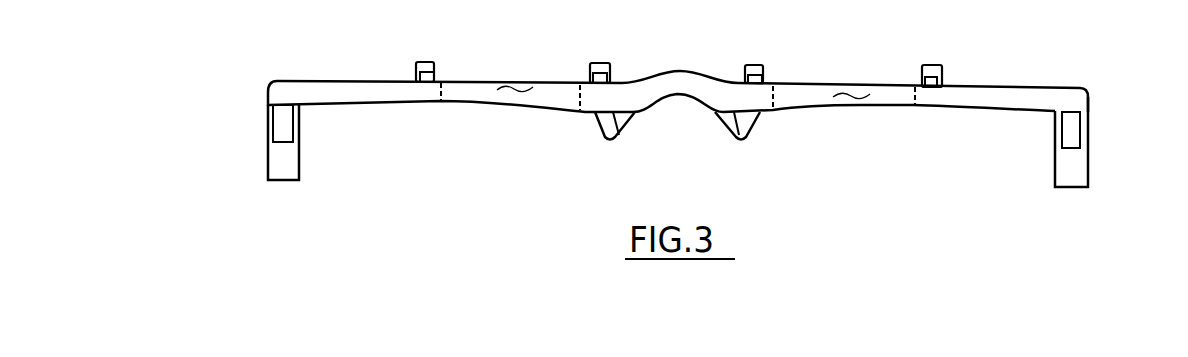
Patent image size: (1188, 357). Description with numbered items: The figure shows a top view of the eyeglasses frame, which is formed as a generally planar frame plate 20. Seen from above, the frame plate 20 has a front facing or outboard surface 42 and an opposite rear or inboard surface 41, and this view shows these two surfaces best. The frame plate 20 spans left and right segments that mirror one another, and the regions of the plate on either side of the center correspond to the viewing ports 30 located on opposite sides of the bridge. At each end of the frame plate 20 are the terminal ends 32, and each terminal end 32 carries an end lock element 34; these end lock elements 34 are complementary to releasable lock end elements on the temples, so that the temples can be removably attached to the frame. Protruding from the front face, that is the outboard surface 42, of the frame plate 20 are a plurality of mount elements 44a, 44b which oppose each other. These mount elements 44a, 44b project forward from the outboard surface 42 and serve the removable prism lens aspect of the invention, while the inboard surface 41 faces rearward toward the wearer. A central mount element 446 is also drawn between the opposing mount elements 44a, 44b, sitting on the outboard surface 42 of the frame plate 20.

The frame plate 20 is at (674, 101).
The viewing ports 30 is at (508, 93).
The terminal ends 32 is at (267, 83).
The end lock elements 34 is at (270, 125).
The inboard surface 41 is at (370, 105).
The outboard surface 42 is at (313, 81).
The mount element 44a is at (417, 62).
The mount element 44b is at (925, 65).
The central tab 446 is at (593, 63).